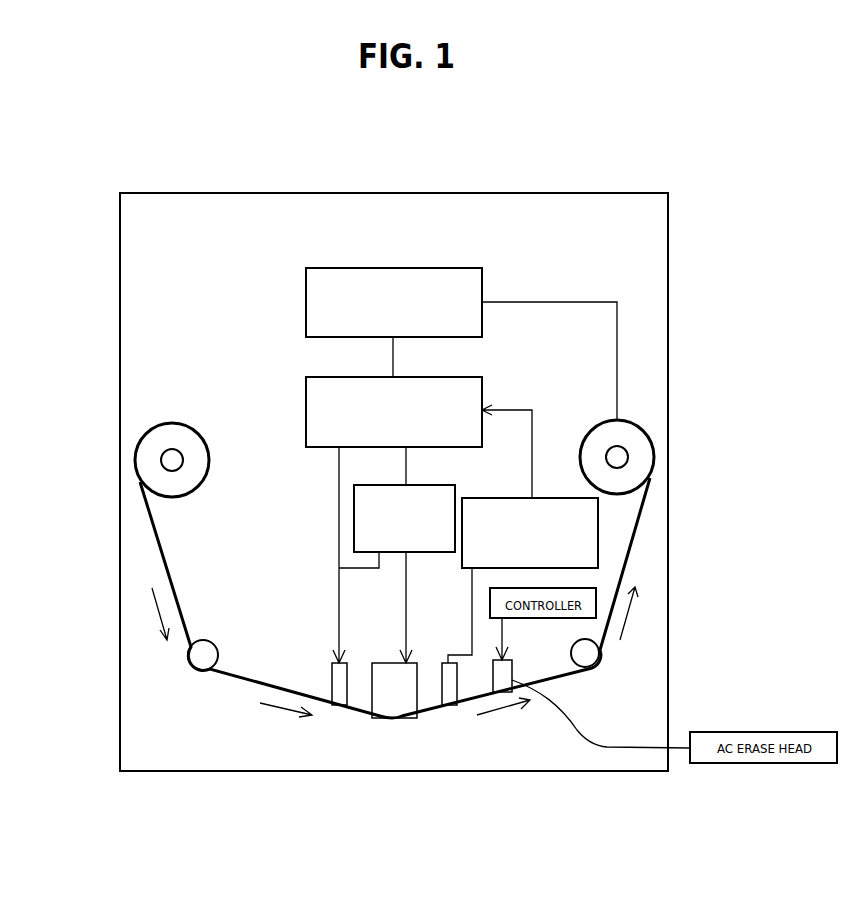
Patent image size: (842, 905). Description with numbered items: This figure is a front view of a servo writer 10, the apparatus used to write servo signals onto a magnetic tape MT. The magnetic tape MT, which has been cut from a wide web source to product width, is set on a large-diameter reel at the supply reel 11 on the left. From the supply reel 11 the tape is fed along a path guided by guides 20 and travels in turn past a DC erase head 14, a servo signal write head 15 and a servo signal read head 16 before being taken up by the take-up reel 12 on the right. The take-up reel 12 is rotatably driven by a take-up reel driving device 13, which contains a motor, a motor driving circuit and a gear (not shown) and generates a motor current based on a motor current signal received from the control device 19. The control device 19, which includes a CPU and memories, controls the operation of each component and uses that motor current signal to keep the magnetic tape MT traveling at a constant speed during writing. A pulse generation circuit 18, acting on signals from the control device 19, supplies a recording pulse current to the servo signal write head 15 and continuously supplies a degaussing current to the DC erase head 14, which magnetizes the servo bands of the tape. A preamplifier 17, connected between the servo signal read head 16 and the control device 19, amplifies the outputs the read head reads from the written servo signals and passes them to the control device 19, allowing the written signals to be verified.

The servo writer 10 is at (503, 193).
The supply reel 11 is at (172, 422).
The take-up reel 12 is at (638, 422).
The take-up reel driving device 13 is at (463, 268).
The DC erase head 14 is at (338, 700).
The servo signal write head 15 is at (417, 692).
The servo signal read head 16 is at (452, 698).
The preamplifier 17 is at (602, 550).
The pulse generation circuit 18 is at (418, 485).
The control device 19 is at (471, 377).
The guides 20 is at (189, 660).
The magnetic tape MT is at (163, 571).